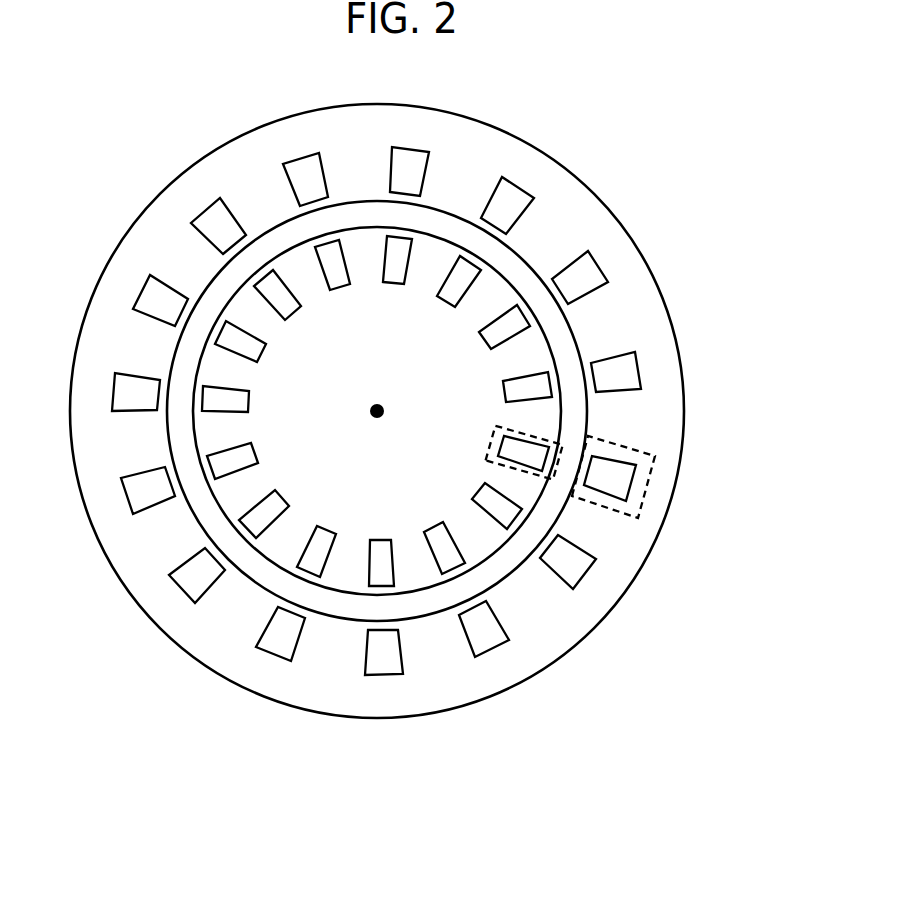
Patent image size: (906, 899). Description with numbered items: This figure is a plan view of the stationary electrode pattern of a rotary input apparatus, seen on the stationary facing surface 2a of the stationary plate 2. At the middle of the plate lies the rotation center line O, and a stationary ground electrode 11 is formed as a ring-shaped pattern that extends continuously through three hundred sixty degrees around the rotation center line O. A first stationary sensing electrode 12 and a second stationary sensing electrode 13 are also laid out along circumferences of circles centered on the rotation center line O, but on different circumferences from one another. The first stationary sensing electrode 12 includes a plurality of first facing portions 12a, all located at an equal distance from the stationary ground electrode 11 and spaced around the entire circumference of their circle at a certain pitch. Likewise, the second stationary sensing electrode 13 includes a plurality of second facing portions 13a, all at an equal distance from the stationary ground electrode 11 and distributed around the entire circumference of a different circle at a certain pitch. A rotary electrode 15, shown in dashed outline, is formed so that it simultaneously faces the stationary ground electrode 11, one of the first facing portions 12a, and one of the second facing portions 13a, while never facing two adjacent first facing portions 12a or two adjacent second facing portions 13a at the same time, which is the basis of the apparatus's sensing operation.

The stationary plate 2 is at (690, 372).
The stationary facing surface 2a is at (587, 215).
The stationary ground electrode 11 is at (210, 518).
The first stationary sensing electrode 12 is at (592, 577).
The first facing portion 12a is at (488, 638).
The second stationary sensing electrode 13 is at (435, 521).
The second facing portion 13a is at (260, 440).
The rotary electrode 15 is at (652, 471).
The rotation center line O is at (382, 403).